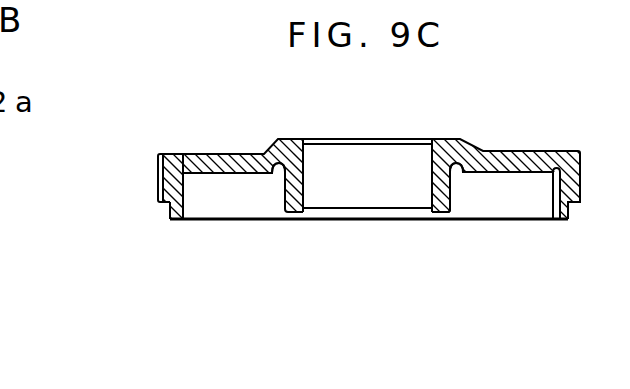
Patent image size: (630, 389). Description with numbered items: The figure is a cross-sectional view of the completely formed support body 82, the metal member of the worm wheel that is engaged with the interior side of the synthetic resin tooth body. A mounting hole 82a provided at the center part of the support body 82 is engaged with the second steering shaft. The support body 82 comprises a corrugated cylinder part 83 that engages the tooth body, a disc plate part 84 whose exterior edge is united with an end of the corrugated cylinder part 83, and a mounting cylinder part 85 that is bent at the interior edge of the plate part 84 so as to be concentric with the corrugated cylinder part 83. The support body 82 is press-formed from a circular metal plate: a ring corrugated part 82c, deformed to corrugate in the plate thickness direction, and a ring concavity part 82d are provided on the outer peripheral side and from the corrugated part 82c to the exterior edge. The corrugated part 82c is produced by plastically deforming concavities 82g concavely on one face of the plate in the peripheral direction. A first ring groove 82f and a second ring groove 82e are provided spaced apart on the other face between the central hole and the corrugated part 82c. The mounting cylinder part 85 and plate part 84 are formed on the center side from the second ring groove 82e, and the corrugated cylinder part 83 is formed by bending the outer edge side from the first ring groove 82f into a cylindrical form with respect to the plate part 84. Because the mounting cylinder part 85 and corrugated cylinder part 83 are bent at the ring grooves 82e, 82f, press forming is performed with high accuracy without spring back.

The support body 82 is at (459, 135).
The mounting hole 82a is at (363, 198).
The ring corrugated part 82c is at (158, 161).
The ring concavity part 82d is at (176, 209).
The second ring groove 82e is at (456, 167).
The first ring groove 82f is at (183, 154).
The concavities 82g is at (162, 172).
The corrugated cylinder part 83 is at (163, 191).
The disc plate part 84 is at (521, 151).
The mounting cylinder part 85 is at (445, 213).